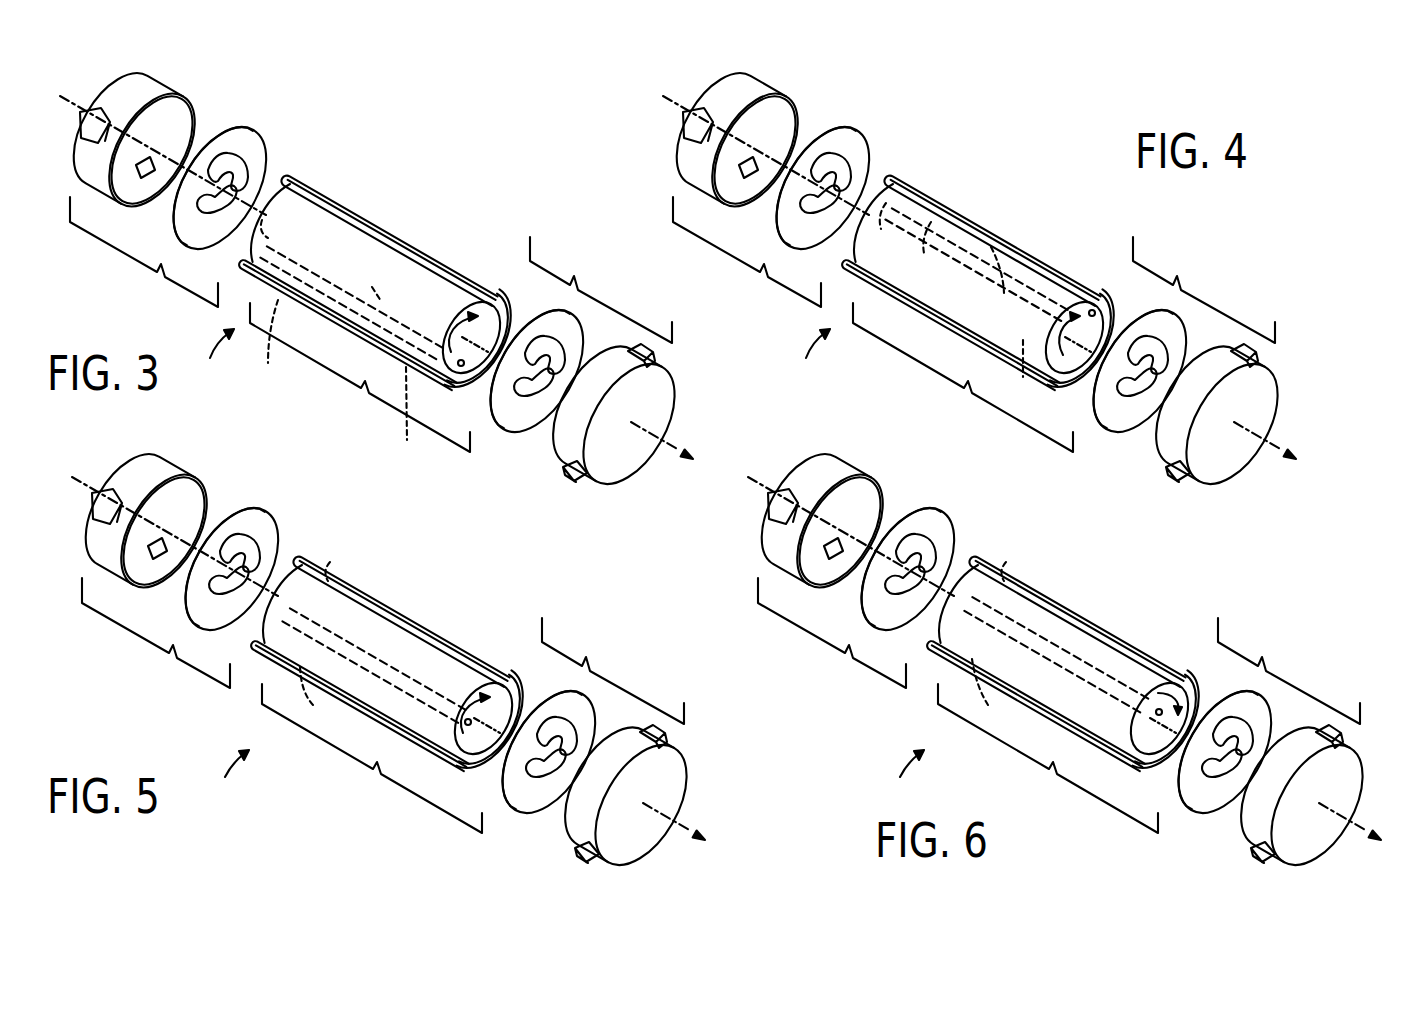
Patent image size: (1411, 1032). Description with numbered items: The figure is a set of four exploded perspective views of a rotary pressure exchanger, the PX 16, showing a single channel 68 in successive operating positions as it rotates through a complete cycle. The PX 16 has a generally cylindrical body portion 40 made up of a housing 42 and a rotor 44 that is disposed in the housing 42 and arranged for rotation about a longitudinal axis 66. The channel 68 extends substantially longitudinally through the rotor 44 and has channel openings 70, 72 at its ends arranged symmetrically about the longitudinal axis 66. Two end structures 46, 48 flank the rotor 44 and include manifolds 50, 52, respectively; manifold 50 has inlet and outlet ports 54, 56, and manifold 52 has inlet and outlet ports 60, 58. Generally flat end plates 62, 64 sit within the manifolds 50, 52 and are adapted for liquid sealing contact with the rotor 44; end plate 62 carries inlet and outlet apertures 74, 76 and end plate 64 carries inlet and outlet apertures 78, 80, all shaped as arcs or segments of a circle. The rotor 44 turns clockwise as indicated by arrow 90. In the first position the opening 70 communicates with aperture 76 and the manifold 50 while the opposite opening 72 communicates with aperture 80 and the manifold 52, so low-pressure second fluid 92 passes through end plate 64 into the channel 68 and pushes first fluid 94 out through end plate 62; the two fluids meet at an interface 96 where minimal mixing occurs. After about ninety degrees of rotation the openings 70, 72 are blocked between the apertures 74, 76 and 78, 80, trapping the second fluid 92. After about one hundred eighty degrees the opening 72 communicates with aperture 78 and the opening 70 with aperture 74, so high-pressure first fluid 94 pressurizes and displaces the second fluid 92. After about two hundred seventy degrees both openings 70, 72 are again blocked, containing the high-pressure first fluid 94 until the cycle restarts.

In FIG. 3, the rotary pressure exchanger (PX) 16 is at (207, 355).
In FIG. 4, the rotary pressure exchanger (PX) 16 is at (803, 355).
In FIG. 5, the rotary pressure exchanger (PX) 16 is at (226, 775).
In FIG. 6, the rotary pressure exchanger (PX) 16 is at (901, 775).
In FIG. 3, the body portion 40 is at (381, 318).
In FIG. 4, the body portion 40 is at (984, 318).
In FIG. 5, the body portion 40 is at (393, 699).
In FIG. 6, the body portion 40 is at (1069, 699).
In FIG. 3, the housing 42 is at (328, 192).
In FIG. 4, the housing 42 is at (992, 232).
In FIG. 5, the housing 42 is at (401, 612).
In FIG. 6, the housing 42 is at (1077, 612).
In FIG. 3, the rotor 44 is at (395, 252).
In FIG. 4, the rotor 44 is at (950, 293).
In FIG. 5, the rotor 44 is at (359, 706).
In FIG. 6, the rotor 44 is at (1035, 706).
In FIG. 3, the end structure 46 is at (601, 286).
In FIG. 4, the end structure 46 is at (1204, 286).
In FIG. 5, the end structure 46 is at (613, 666).
In FIG. 6, the end structure 46 is at (1289, 666).
In FIG. 3, the end structure 48 is at (144, 254).
In FIG. 4, the end structure 48 is at (747, 254).
In FIG. 5, the end structure 48 is at (156, 634).
In FIG. 6, the end structure 48 is at (832, 634).
In FIG. 3, the manifold 50 is at (669, 392).
In FIG. 4, the manifold 50 is at (1242, 423).
In FIG. 5, the manifold 50 is at (650, 804).
In FIG. 6, the manifold 50 is at (1325, 804).
In FIG. 3, the manifold 52 is at (166, 88).
In FIG. 4, the manifold 52 is at (753, 138).
In FIG. 5, the manifold 52 is at (159, 517).
In FIG. 6, the manifold 52 is at (834, 517).
In FIG. 3, the inlet port 54 is at (650, 345).
In FIG. 4, the inlet port 54 is at (1235, 338).
In FIG. 5, the inlet port 54 is at (645, 718).
In FIG. 6, the inlet port 54 is at (1320, 718).
In FIG. 3, the outlet port 56 is at (567, 477).
In FIG. 4, the outlet port 56 is at (1163, 493).
In FIG. 5, the outlet port 56 is at (572, 873).
In FIG. 6, the outlet port 56 is at (1247, 873).
In FIG. 3, the outlet port 58 is at (94, 118).
In FIG. 4, the outlet port 58 is at (671, 120).
In FIG. 5, the outlet port 58 is at (81, 500).
In FIG. 6, the outlet port 58 is at (755, 500).
In FIG. 3, the inlet port 60 is at (142, 176).
In FIG. 4, the inlet port 60 is at (737, 202).
In FIG. 5, the inlet port 60 is at (146, 582).
In FIG. 6, the inlet port 60 is at (822, 582).
In FIG. 3, the end plate 62 is at (571, 326).
In FIG. 4, the end plate 62 is at (1142, 365).
In FIG. 5, the end plate 62 is at (551, 745).
In FIG. 6, the end plate 62 is at (1227, 745).
In FIG. 3, the end plate 64 is at (262, 143).
In FIG. 4, the end plate 64 is at (837, 187).
In FIG. 5, the end plate 64 is at (248, 568).
In FIG. 6, the end plate 64 is at (923, 568).
In FIG. 3, the longitudinal axis 66 is at (70, 99).
In FIG. 4, the longitudinal axis 66 is at (766, 131).
In FIG. 5, the longitudinal axis 66 is at (175, 510).
In FIG. 6, the longitudinal axis 66 is at (850, 510).
In FIG. 3, the channel 68 is at (323, 312).
In FIG. 4, the channel 68 is at (976, 289).
In FIG. 5, the channel 68 is at (373, 642).
In FIG. 6, the channel 68 is at (1056, 637).
In FIG. 3, the channel opening 70 is at (461, 367).
In FIG. 4, the channel opening 70 is at (1098, 270).
In FIG. 5, the channel opening 70 is at (467, 764).
In FIG. 6, the channel opening 70 is at (1143, 759).
In FIG. 3, the channel opening 72 is at (276, 228).
In FIG. 4, the channel opening 72 is at (880, 231).
In FIG. 5, the channel opening 72 is at (351, 537).
In FIG. 6, the channel opening 72 is at (1026, 537).
In FIG. 3, the inlet aperture 74 is at (541, 352).
In FIG. 4, the inlet aperture 74 is at (1148, 324).
In FIG. 5, the inlet aperture 74 is at (556, 702).
In FIG. 6, the inlet aperture 74 is at (1232, 702).
In FIG. 3, the outlet aperture 76 is at (522, 392).
In FIG. 4, the outlet aperture 76 is at (1123, 420).
In FIG. 5, the outlet aperture 76 is at (532, 801).
In FIG. 6, the outlet aperture 76 is at (1207, 801).
In FIG. 3, the inlet aperture 78 is at (228, 160).
In FIG. 4, the inlet aperture 78 is at (842, 139).
In FIG. 5, the inlet aperture 78 is at (252, 519).
In FIG. 6, the inlet aperture 78 is at (927, 519).
In FIG. 3, the outlet aperture 80 is at (210, 205).
In FIG. 4, the outlet aperture 80 is at (764, 235).
In FIG. 5, the outlet aperture 80 is at (173, 616).
In FIG. 6, the outlet aperture 80 is at (849, 616).
In FIG. 3, the arrow 90 is at (452, 305).
In FIG. 4, the arrow 90 is at (1068, 368).
In FIG. 5, the arrow 90 is at (477, 665).
In FIG. 6, the arrow 90 is at (1172, 651).
In FIG. 3, the second fluid 92 is at (268, 346).
In FIG. 4, the second fluid 92 is at (925, 249).
In FIG. 5, the second fluid 92 is at (320, 695).
In FIG. 3, the first fluid 94 is at (410, 416).
In FIG. 4, the first fluid 94 is at (1020, 379).
In FIG. 6, the first fluid 94 is at (993, 693).
In FIG. 3, the interface 96 is at (380, 295).
In FIG. 4, the interface 96 is at (1005, 284).